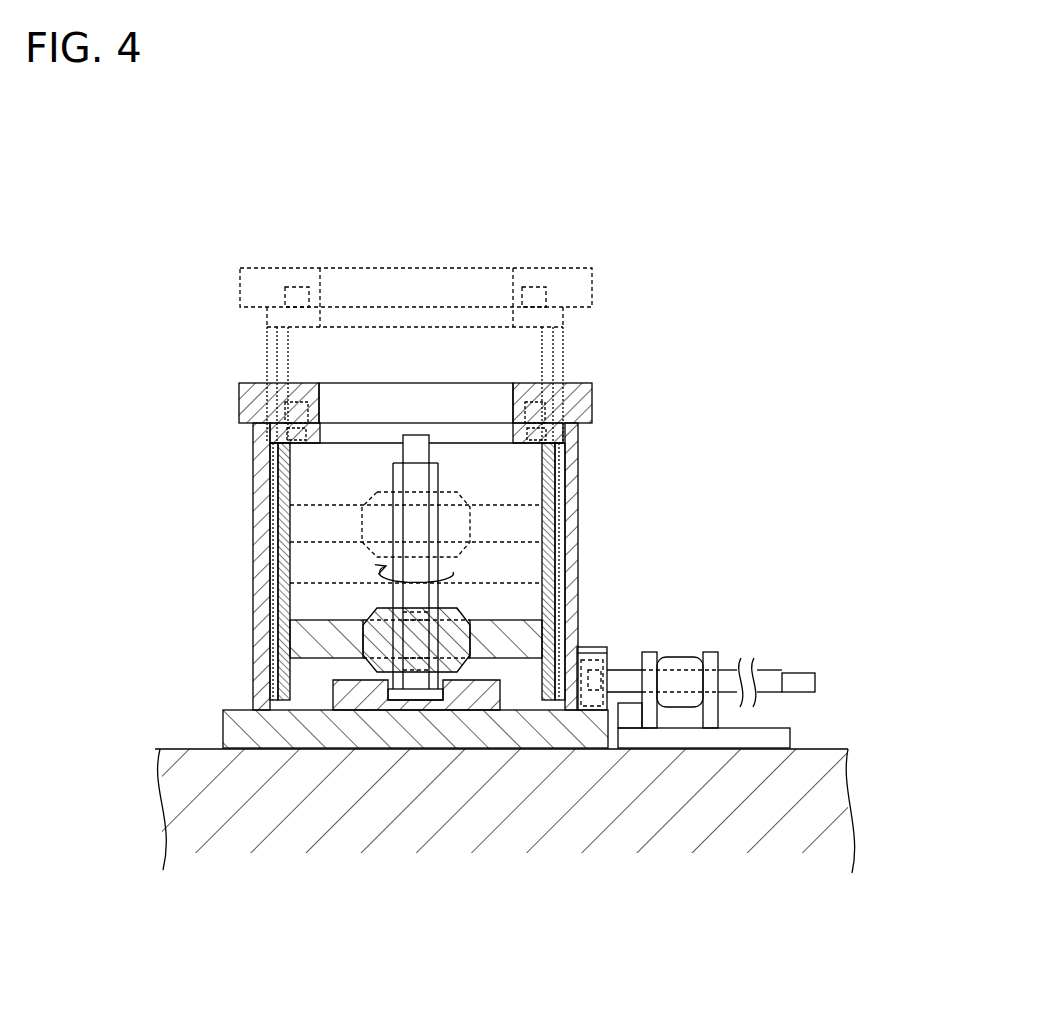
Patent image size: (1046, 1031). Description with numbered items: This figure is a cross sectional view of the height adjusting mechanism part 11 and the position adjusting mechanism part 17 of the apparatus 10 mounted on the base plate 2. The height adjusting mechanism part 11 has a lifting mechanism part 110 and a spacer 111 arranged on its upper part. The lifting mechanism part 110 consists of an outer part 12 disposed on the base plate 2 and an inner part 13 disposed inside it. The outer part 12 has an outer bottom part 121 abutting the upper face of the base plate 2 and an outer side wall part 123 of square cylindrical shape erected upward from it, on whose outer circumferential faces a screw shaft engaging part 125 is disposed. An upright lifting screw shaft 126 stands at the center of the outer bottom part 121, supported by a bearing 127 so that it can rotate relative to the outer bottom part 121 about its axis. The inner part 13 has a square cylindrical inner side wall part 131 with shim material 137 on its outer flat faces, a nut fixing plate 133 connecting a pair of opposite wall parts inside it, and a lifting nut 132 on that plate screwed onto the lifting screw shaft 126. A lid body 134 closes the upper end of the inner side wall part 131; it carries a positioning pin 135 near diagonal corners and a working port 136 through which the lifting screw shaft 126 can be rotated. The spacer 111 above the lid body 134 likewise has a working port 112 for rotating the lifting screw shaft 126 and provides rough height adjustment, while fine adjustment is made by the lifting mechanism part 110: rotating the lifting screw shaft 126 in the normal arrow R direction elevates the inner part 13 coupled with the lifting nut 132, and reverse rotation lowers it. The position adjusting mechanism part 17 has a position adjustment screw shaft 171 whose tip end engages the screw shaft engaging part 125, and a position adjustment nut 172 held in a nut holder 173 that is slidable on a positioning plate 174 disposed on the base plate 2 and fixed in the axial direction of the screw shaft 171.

The base plate 2 is at (243, 820).
The rotary driving device 10 is at (602, 177).
The height adjusting mechanism part 11 is at (597, 377).
The spacer 111 is at (580, 407).
The working port 112 is at (318, 440).
The outer part 12 is at (250, 571).
The outer bottom part 121 is at (353, 727).
The outer side wall part 123 is at (260, 518).
The screw shaft engaging part 125 is at (595, 643).
The lifting screw shaft 126 is at (420, 477).
The bearing 127 is at (414, 712).
The inner part 13 is at (572, 325).
The inner side wall part 131 is at (280, 463).
The lifting nut 132 is at (373, 638).
The nut fixing plate 133 is at (317, 637).
The lid body 134 is at (512, 428).
The positioning pin 135 is at (298, 383).
The working port 136 is at (335, 422).
The shim material 137 is at (272, 492).
The lifting mechanism part 110 is at (632, 523).
The position adjusting mechanism part 17 is at (684, 651).
The position adjustment screw shaft 171 is at (763, 678).
The position adjustment nut 172 is at (675, 703).
The nut holder 173 is at (700, 720).
The positioning plate 174 is at (757, 740).
The arrow R direction R is at (438, 563).